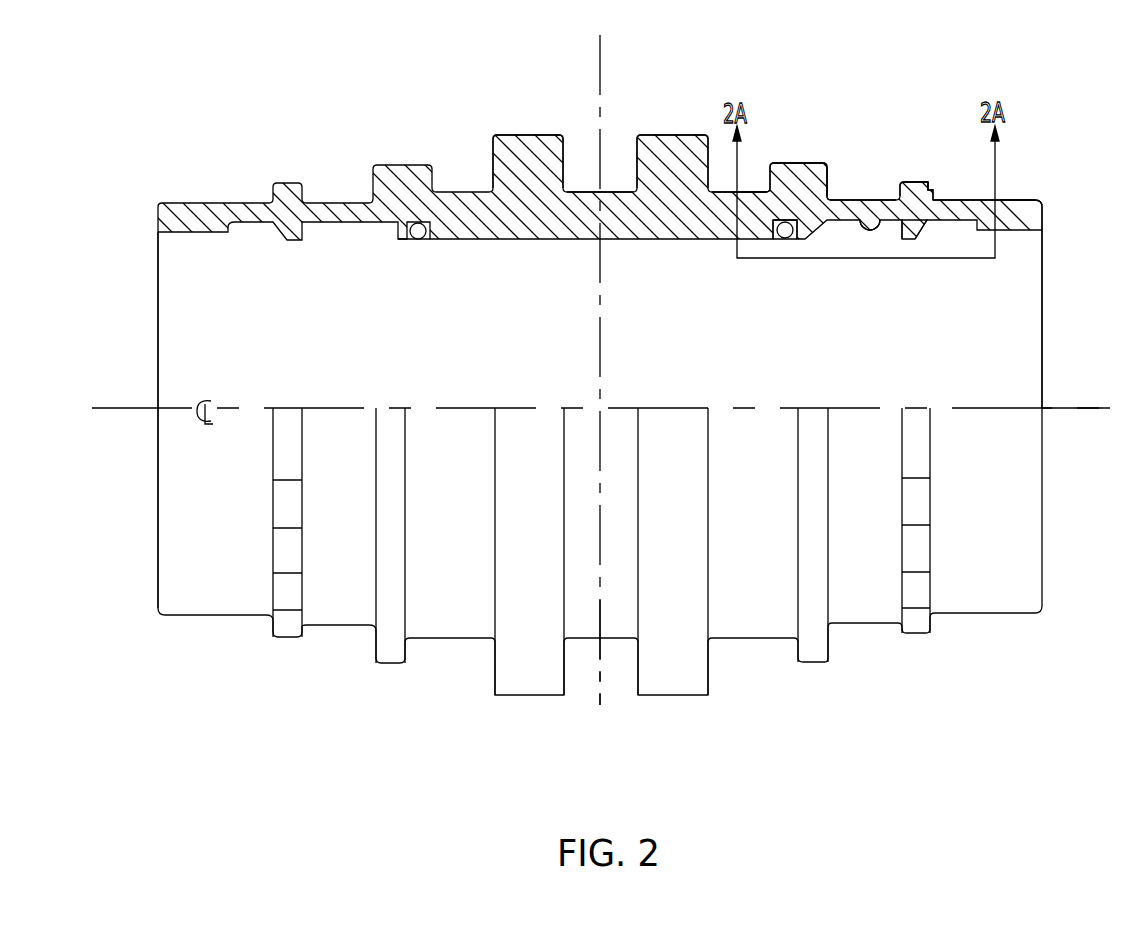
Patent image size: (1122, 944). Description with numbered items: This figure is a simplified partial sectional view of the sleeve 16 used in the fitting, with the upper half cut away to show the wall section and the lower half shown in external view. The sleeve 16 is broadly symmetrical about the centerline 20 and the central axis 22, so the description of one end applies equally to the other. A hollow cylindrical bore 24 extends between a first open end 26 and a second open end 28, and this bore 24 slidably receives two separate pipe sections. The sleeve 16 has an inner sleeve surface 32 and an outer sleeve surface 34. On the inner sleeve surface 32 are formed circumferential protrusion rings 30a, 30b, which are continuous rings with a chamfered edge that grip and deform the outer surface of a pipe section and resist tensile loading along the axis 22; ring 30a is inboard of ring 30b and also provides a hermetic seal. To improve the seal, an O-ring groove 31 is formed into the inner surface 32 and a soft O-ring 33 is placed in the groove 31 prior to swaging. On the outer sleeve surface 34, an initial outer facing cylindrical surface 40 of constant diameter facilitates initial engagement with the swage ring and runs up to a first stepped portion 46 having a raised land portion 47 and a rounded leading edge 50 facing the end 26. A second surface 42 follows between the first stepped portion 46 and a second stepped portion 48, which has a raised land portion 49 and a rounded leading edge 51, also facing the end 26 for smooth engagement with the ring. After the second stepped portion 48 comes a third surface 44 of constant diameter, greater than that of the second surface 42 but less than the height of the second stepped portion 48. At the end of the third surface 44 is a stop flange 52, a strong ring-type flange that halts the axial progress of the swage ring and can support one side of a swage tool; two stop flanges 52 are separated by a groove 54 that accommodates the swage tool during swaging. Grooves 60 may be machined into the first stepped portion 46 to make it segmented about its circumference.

The sleeve 16 is at (1022, 200).
The centerline 20 is at (600, 690).
The central axis 22 is at (1083, 410).
The hollow cylindrical bore 24 is at (203, 312).
The first open end 26 is at (1043, 318).
The second open end 28 is at (159, 463).
The protrusion ring 30a is at (803, 240).
The protrusion ring 30b is at (904, 242).
The O-ring groove 31 is at (773, 240).
The inner sleeve surface 32 is at (877, 219).
The O-ring 33 is at (784, 240).
The outer sleeve surface 34 is at (733, 190).
The initial outer facing cylindrical surface 40 is at (983, 200).
The second surface 42 is at (848, 199).
The third surface 44 is at (753, 191).
The first stepped portion 46 is at (932, 190).
The raised land portion 47 is at (905, 182).
The second stepped portion 48 is at (785, 163).
The raised land portion 49 is at (805, 163).
The rounded leading edge 50 is at (920, 182).
The rounded leading edge 51 is at (823, 163).
The stop flange 52 is at (528, 135).
The groove 54 is at (583, 190).
The grooves 60 is at (908, 593).